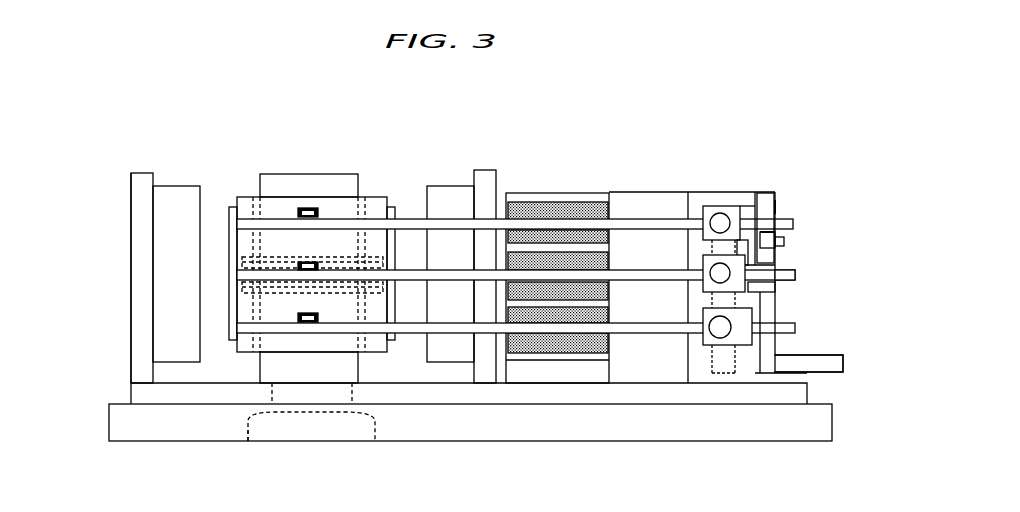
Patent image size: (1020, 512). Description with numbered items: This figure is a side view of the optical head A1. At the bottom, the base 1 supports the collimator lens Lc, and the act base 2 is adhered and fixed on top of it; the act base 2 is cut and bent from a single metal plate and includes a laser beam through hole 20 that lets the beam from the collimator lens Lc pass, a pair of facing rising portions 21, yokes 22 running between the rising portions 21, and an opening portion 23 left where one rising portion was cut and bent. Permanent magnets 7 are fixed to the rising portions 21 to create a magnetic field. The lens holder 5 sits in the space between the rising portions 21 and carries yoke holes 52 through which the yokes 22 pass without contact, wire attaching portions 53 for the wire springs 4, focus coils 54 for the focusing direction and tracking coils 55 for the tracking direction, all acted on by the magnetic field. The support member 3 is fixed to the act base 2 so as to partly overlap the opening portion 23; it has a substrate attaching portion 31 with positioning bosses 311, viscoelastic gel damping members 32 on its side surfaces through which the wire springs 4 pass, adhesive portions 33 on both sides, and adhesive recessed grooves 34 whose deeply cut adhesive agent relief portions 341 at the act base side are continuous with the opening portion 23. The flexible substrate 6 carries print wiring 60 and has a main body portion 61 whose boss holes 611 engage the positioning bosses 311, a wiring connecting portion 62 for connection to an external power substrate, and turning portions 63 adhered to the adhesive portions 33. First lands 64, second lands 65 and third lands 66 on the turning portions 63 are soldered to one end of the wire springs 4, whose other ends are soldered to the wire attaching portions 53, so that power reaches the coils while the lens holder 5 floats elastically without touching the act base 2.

The optical head A1 is at (157, 142).
The base 1 is at (461, 428).
The act base 2 is at (143, 357).
The support member 3 is at (547, 193).
The wire springs 4 is at (636, 327).
The lens holder 5 is at (378, 197).
The flexible substrate 6 is at (781, 195).
The permanent magnets 7 is at (185, 294).
The laser beam through hole 20 is at (334, 395).
The rising portions 21 is at (143, 293).
The yokes 22 is at (345, 182).
The opening portion 23 is at (607, 395).
The substrate attaching portion 31 is at (762, 196).
The damping members 32 is at (525, 313).
The adhesive portions 33 is at (692, 212).
The adhesive recessed grooves 34 is at (732, 352).
The adhesive agent relief portions 341 is at (723, 380).
The yoke holes 52 is at (363, 350).
The wire attaching portions 53 is at (302, 207).
The focus coils 54 is at (365, 288).
The tracking coils 55 is at (232, 208).
The print wiring 60 is at (797, 268).
The main body portion 61 is at (776, 207).
The wiring connecting portion 62 is at (818, 365).
The turning portions 63 is at (708, 368).
The first lands 64 is at (732, 207).
The second lands 65 is at (710, 257).
The third lands 66 is at (707, 340).
The positioning bosses 311 is at (785, 242).
The boss holes 611 is at (785, 235).
The collimator lens Lc is at (222, 474).